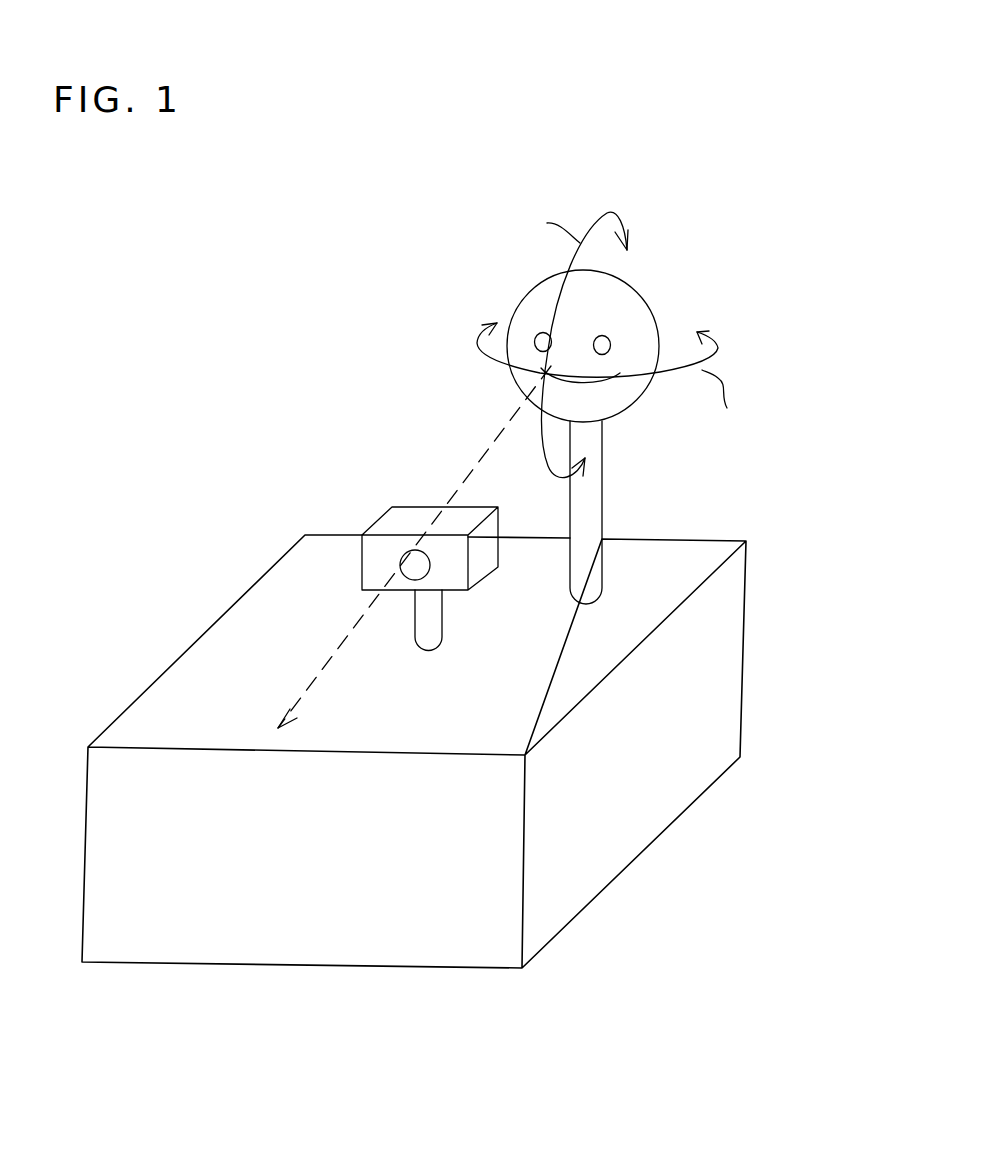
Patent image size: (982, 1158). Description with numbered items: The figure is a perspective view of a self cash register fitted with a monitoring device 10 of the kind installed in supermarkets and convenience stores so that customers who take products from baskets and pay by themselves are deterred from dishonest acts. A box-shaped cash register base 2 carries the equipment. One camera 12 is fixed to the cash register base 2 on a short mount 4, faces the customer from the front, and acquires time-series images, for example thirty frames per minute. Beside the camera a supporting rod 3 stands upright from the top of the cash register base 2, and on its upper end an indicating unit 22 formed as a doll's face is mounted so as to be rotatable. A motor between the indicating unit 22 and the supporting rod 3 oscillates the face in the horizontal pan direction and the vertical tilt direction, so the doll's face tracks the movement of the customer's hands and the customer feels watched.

The monitoring device 10 is at (467, 590).
The cash register base 2 is at (217, 662).
The camera 12 is at (396, 520).
The camera support shaft 4 is at (430, 628).
The supporting rod 3 is at (588, 508).
The indicating unit 22 is at (633, 312).